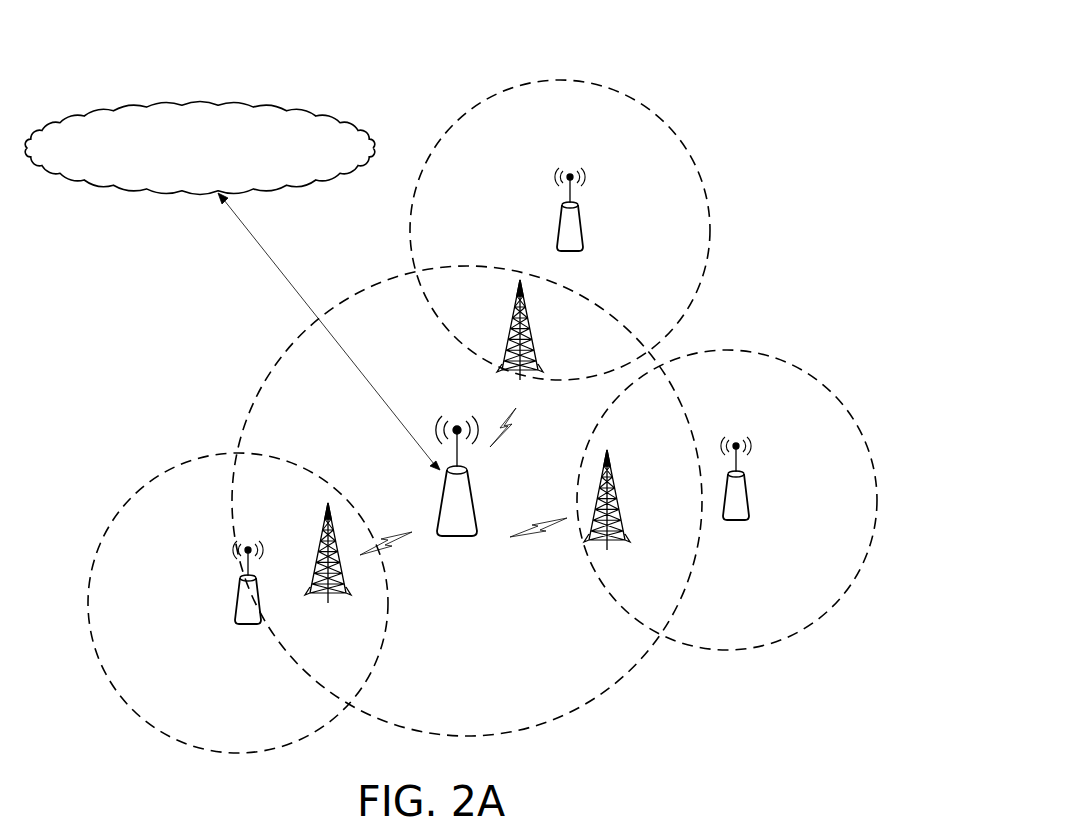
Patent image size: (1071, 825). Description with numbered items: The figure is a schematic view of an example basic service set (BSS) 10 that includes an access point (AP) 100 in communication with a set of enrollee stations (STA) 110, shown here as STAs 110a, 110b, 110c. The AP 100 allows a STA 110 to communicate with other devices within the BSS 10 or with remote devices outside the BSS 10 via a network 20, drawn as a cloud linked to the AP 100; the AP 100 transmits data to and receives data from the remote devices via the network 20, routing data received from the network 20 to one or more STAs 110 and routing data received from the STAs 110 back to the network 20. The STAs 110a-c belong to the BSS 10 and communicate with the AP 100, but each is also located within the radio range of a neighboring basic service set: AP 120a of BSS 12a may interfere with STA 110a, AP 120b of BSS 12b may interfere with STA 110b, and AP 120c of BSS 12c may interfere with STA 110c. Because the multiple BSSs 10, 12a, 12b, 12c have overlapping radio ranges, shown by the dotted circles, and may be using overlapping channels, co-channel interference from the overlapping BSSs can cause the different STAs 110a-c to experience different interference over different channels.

The access point 100 is at (437, 512).
The basic service set 10 is at (408, 272).
The basic service set 12a is at (148, 482).
The basic service set 12b is at (791, 364).
The basic service set 12c is at (487, 100).
The network 20 is at (349, 132).
The enrollee station 110 is at (439, 453).
The station 110a is at (317, 546).
The station 110b is at (596, 496).
The station 110c is at (510, 338).
The access point 120a is at (236, 606).
The access point 120b is at (723, 500).
The access point 120c is at (558, 232).